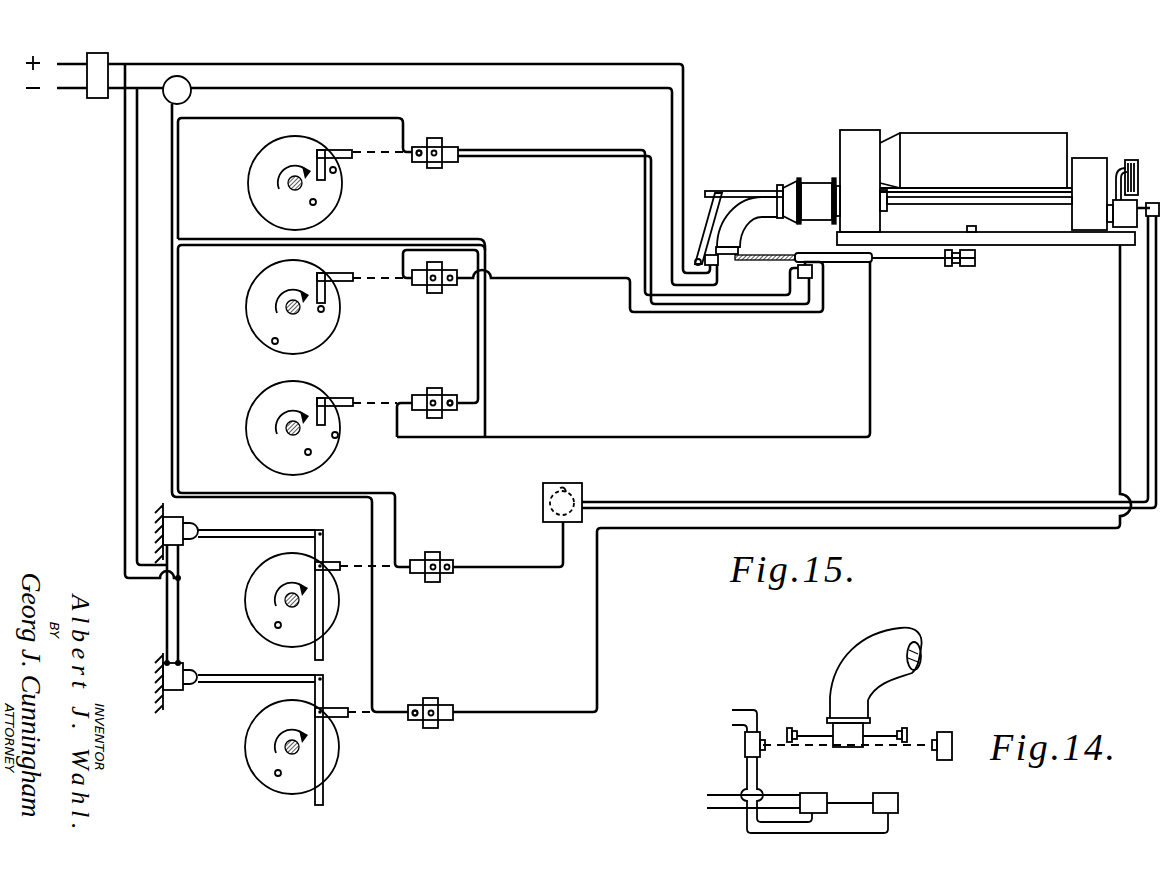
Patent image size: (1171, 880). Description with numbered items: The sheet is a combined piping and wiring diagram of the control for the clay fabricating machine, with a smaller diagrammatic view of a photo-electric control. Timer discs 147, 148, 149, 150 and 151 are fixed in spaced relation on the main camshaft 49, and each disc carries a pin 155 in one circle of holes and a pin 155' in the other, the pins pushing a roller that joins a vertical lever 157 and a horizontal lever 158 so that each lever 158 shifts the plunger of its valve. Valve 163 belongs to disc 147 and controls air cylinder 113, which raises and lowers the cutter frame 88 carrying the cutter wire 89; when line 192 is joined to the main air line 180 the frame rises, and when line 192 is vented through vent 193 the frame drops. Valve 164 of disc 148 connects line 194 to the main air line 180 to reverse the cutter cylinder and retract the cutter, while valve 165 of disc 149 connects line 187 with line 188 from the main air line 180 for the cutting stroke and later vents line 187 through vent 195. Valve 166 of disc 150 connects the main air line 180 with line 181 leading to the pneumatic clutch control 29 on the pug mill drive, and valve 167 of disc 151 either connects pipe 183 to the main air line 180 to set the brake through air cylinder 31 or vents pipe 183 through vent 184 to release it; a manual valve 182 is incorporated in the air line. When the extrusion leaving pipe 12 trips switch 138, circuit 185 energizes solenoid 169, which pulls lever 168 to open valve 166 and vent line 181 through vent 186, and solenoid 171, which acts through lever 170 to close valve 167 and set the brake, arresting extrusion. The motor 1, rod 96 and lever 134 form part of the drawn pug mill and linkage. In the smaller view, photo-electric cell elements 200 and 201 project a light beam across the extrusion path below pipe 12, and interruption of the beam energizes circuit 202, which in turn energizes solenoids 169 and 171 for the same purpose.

In FIG. 15, the motor 1 is at (992, 132).
In FIG. 15, the pipe 12 is at (745, 202).
In FIG. 14, the pipe 12 is at (873, 645).
In FIG. 15, the pneumatic clutch control 29 is at (1140, 208).
In FIG. 15, the air cylinder 31 is at (1130, 160).
In FIG. 15, the main camshaft 49 is at (292, 190).
In FIG. 15, the cutter frame 88 is at (760, 255).
In FIG. 14, the cutter frame 88 is at (903, 728).
In FIG. 14, the cutter wire 89 is at (810, 734).
In FIG. 15, the actuating rod 96 is at (845, 263).
In FIG. 15, the air cylinder 113 is at (798, 272).
In FIG. 15, the lever 134 is at (705, 222).
In FIG. 15, the switch 138 is at (716, 266).
In FIG. 15, the timer disc 147 is at (250, 180).
In FIG. 15, the timer disc 148 is at (258, 323).
In FIG. 15, the timer disc 149 is at (255, 432).
In FIG. 15, the timer disc 150 is at (250, 602).
In FIG. 15, the timer disc 151 is at (250, 749).
In FIG. 15, the pin 155 is at (316, 313).
In FIG. 15, the pin 155' is at (288, 512).
In FIG. 15, the lever 157 is at (315, 558).
In FIG. 15, the lever 158 is at (328, 150).
In FIG. 15, the valve 163 is at (437, 138).
In FIG. 15, the valve 164 is at (438, 293).
In FIG. 15, the valve 165 is at (450, 410).
In FIG. 15, the valve 166 is at (437, 553).
In FIG. 15, the valve 167 is at (437, 698).
In FIG. 15, the lever 168 is at (250, 531).
In FIG. 15, the solenoid 169 is at (183, 518).
In FIG. 14, the solenoid 169 is at (815, 787).
In FIG. 15, the lever 170 is at (263, 675).
In FIG. 15, the solenoid 171 is at (178, 694).
In FIG. 14, the solenoid 171 is at (895, 787).
In FIG. 15, the main air line 180 is at (178, 385).
In FIG. 15, the line 181 is at (683, 502).
In FIG. 15, the manual valve 182 is at (568, 483).
In FIG. 15, the pipe 183 is at (600, 640).
In FIG. 15, the vent 184 is at (415, 718).
In FIG. 15, the circuit 185 is at (123, 288).
In FIG. 15, the vent 186 is at (447, 575).
In FIG. 15, the line 187 is at (665, 430).
In FIG. 15, the line 188 is at (490, 340).
In FIG. 15, the line 192 is at (604, 151).
In FIG. 15, the vent 193 is at (419, 157).
In FIG. 15, the line 194 is at (552, 270).
In FIG. 15, the vent 195 is at (448, 388).
In FIG. 14, the photo-electric cell element 200 is at (745, 745).
In FIG. 14, the photo-electric cell element 201 is at (945, 762).
In FIG. 14, the circuit 202 is at (745, 777).